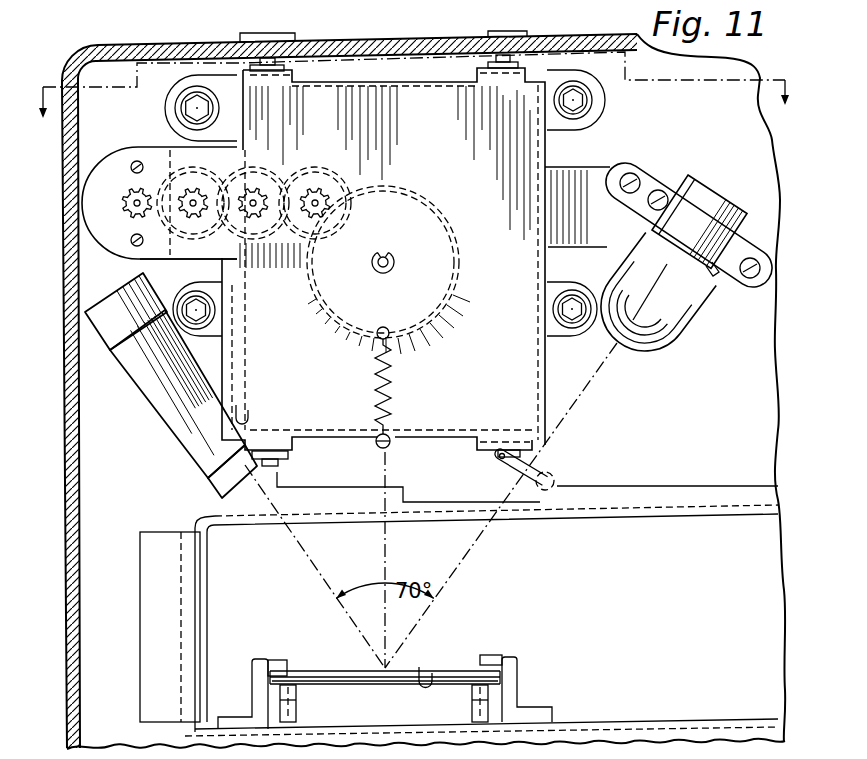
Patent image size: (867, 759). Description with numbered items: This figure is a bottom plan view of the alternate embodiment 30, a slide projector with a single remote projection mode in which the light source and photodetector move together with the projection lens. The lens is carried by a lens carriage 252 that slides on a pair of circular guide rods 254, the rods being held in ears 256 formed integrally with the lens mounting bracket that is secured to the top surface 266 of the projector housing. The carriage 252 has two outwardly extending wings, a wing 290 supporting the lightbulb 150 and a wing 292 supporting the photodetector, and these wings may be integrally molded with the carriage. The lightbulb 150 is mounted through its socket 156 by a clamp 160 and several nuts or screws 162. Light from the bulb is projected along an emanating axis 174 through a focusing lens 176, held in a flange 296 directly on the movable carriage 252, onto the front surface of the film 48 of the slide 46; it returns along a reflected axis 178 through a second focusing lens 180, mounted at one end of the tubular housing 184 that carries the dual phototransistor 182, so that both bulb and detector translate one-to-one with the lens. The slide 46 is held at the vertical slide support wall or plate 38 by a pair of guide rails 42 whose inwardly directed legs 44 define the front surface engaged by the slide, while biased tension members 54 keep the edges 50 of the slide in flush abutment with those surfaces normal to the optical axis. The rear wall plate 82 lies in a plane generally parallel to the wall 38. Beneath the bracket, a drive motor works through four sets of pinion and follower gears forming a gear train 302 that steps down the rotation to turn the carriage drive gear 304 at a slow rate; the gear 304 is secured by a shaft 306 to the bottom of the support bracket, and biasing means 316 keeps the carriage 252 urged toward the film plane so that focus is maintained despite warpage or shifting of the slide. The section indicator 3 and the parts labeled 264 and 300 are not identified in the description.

The section line 3- 3 is at (411, 98).
The alternate embodiment 30 is at (545, 569).
The vertical wall or plate 38 is at (657, 719).
The vertical guide rails 42 is at (258, 690).
The inwardly directed legs 44 is at (268, 658).
The slide 46 is at (349, 661).
The film 48 is at (367, 686).
The edges of the slide 50 is at (428, 668).
The biased tension members 54 is at (298, 702).
The rear wall plate 82 is at (607, 517).
The lightbulb 150 is at (662, 350).
The socket 156 is at (700, 186).
The clamp 160 is at (716, 268).
The nuts or screws 162 is at (659, 190).
The emanating axis 174 is at (597, 372).
The focusing lens 176 is at (547, 460).
The reflected axis 178 is at (285, 549).
The focusing lens 180 is at (218, 488).
The dual phototransistor 182 is at (103, 340).
The tubular housing 184 is at (157, 390).
The lens carriage 252 is at (548, 153).
The circular guide rods 254 is at (268, 55).
The ears 256 is at (254, 58).
The mounting bolt 264 is at (176, 106).
The top surface of the housing 266 is at (700, 434).
The wing 290 is at (628, 224).
The wing 292 is at (215, 352).
The flange 296 is at (556, 481).
The motor mounting plate 300 is at (159, 203).
The gear train 302 is at (166, 259).
The carriage drive gear 304 is at (414, 198).
The shaft 306 is at (385, 251).
The biasing means 316 is at (393, 377).